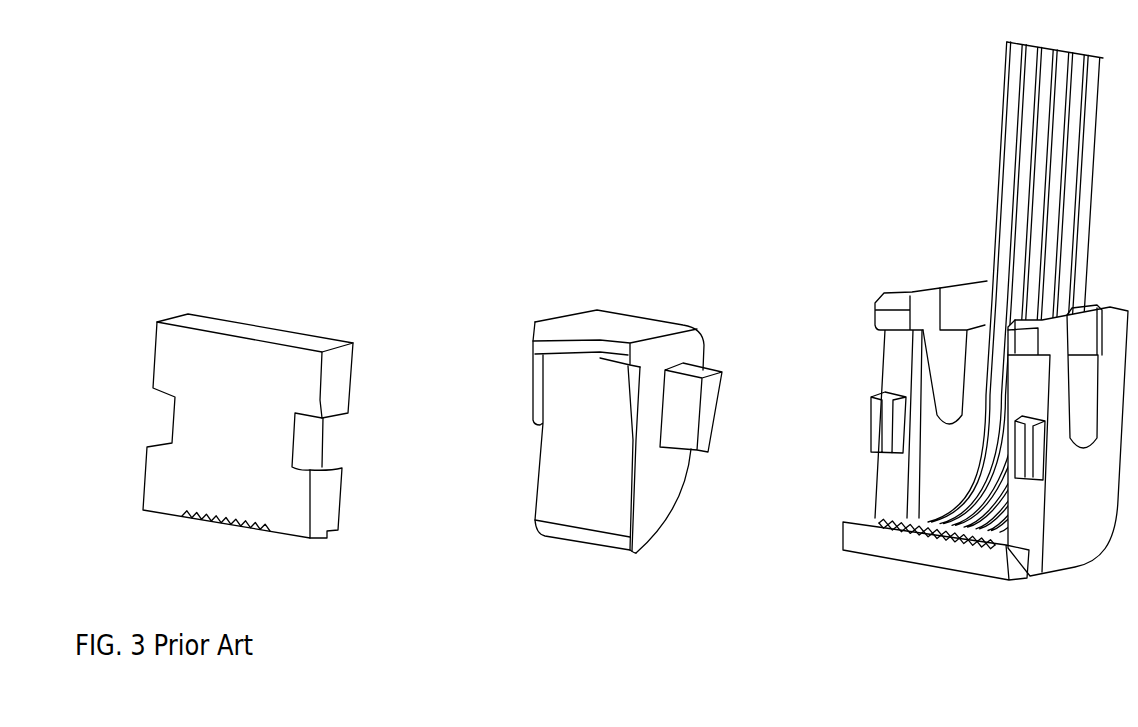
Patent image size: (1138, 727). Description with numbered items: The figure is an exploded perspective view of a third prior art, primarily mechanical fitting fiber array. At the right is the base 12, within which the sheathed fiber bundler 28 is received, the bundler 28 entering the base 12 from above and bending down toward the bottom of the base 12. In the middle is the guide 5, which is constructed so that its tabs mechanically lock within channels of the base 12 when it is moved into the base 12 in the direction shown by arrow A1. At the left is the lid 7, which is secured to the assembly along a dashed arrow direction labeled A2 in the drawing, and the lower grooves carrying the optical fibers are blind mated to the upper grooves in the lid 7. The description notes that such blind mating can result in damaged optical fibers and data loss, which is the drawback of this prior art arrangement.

The lid 7 is at (249, 438).
The guide 5 is at (590, 470).
The base 12 is at (1100, 524).
The sheathed fiber bundler 28 is at (975, 120).
The arrow A1 is at (948, 391).
The insertion direction A2 is at (315, 448).